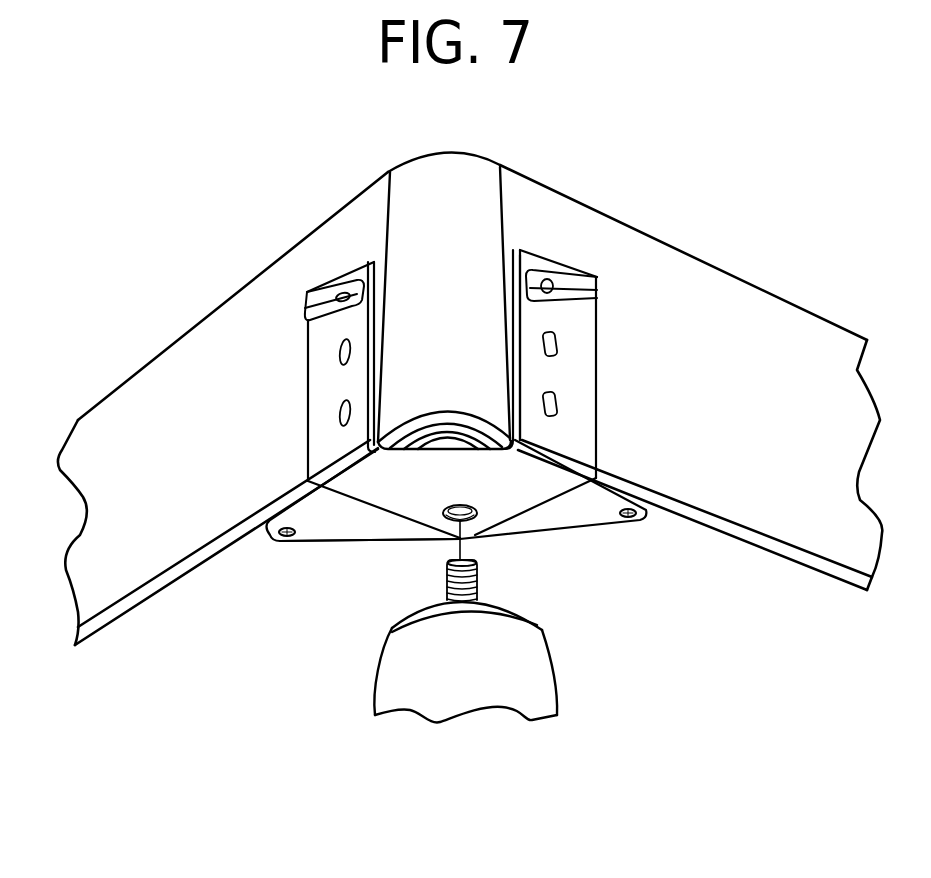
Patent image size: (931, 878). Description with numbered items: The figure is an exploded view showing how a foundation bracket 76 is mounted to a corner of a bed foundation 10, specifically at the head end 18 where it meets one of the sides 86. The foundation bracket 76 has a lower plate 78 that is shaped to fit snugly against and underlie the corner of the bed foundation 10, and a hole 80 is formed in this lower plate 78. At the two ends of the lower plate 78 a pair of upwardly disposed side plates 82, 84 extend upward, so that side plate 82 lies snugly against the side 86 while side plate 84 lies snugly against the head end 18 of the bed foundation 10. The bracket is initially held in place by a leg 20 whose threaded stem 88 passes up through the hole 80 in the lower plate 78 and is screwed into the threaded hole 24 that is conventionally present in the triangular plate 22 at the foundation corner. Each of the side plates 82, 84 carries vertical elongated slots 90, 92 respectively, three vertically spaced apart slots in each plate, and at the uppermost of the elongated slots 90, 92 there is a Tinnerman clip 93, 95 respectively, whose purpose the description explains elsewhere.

The bed foundation 10 is at (230, 243).
The head end 18 is at (795, 416).
The leg 20 is at (532, 670).
The triangular plate 22 is at (583, 512).
The threaded hole 24 is at (467, 518).
The foundation bracket 76 is at (597, 442).
The lower plate 78 is at (402, 497).
The hole 80 is at (463, 504).
The side plate 82 is at (327, 389).
The side plate 84 is at (580, 370).
The side 86 is at (171, 468).
The threaded stem 88 is at (478, 582).
The elongated slots 90 is at (338, 354).
The elongated slots 92 is at (543, 273).
The Tinnerman clip 93 is at (316, 300).
The Tinnerman clip 95 is at (600, 277).